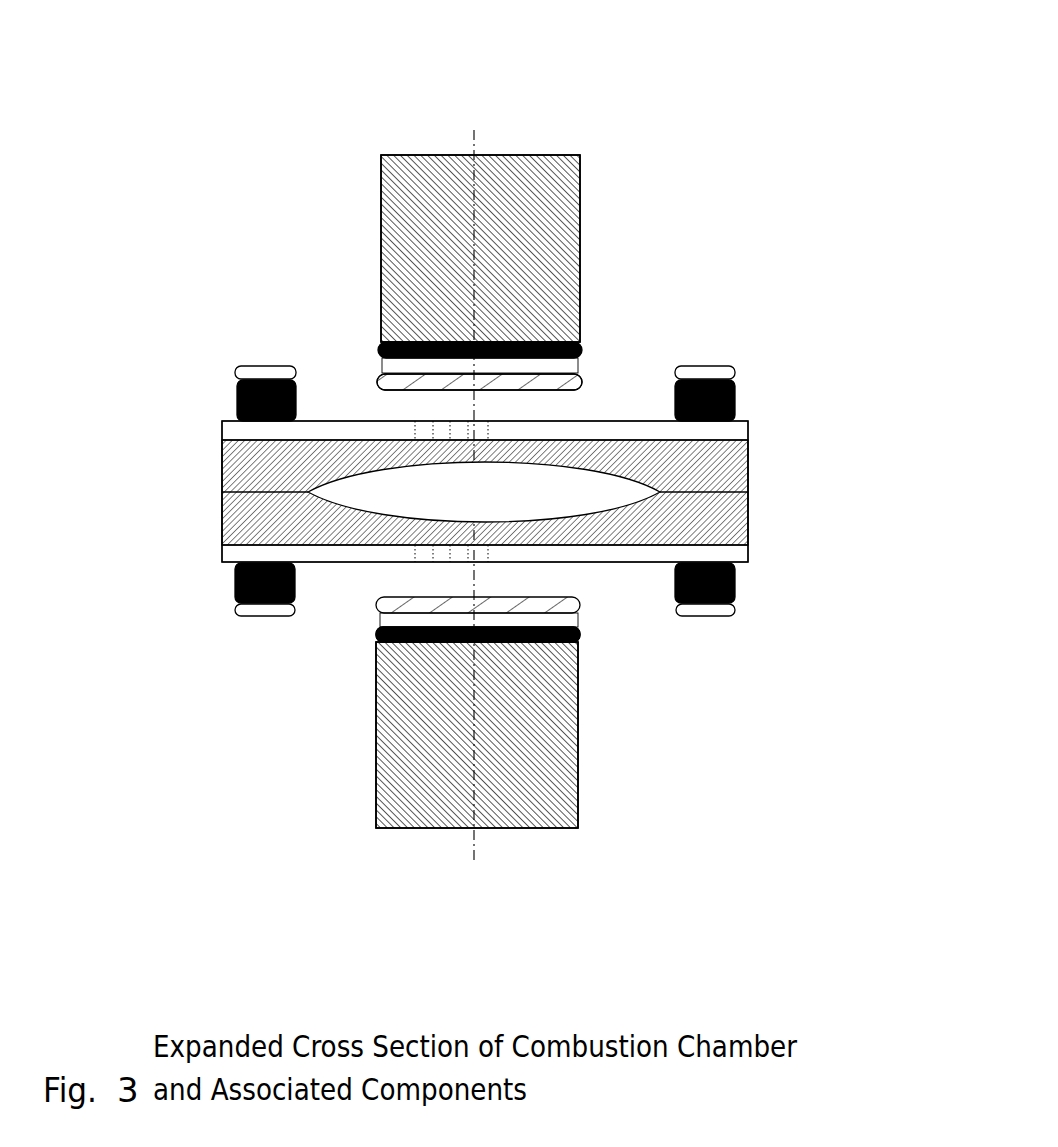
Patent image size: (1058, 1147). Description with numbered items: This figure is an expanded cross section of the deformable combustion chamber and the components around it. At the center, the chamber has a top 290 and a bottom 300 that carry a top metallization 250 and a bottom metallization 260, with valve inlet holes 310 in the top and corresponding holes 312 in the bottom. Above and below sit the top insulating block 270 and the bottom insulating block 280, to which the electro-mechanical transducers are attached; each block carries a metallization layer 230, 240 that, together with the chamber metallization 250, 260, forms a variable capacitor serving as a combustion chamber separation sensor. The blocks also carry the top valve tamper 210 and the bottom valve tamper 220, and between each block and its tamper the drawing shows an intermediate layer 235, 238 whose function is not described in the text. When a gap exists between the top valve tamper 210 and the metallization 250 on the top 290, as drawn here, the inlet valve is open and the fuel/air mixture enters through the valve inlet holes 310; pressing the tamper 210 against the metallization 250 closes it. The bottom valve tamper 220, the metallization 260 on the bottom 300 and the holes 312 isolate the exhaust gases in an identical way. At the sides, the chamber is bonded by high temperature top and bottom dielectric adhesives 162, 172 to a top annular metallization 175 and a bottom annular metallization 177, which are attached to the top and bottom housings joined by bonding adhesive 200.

The top dielectric adhesive 162 is at (237, 390).
The bottom dielectric adhesive 172 is at (237, 578).
The top annular metallization 175 is at (260, 365).
The bottom annular metallization 177 is at (263, 607).
The bonding adhesive 200 is at (403, 337).
The top valve tamper 210 is at (470, 417).
The bottom valve tamper 220 is at (560, 648).
The top metallization layer 230 is at (398, 345).
The upper insulating layer 235 is at (402, 402).
The lower insulating layer 238 is at (402, 577).
The bottom metallization layer 240 is at (395, 645).
The top combustion chamber metallization 250 is at (557, 418).
The bottom combustion chamber metallization 260 is at (578, 640).
The top insulating block 270 is at (495, 195).
The bottom insulating block 280 is at (505, 805).
The top of the deformable combustion chamber 290 is at (670, 457).
The bottom of the deformable combustion chamber 300 is at (655, 503).
The valve inlet holes 310 is at (470, 417).
The bottom valve holes 312 is at (438, 640).